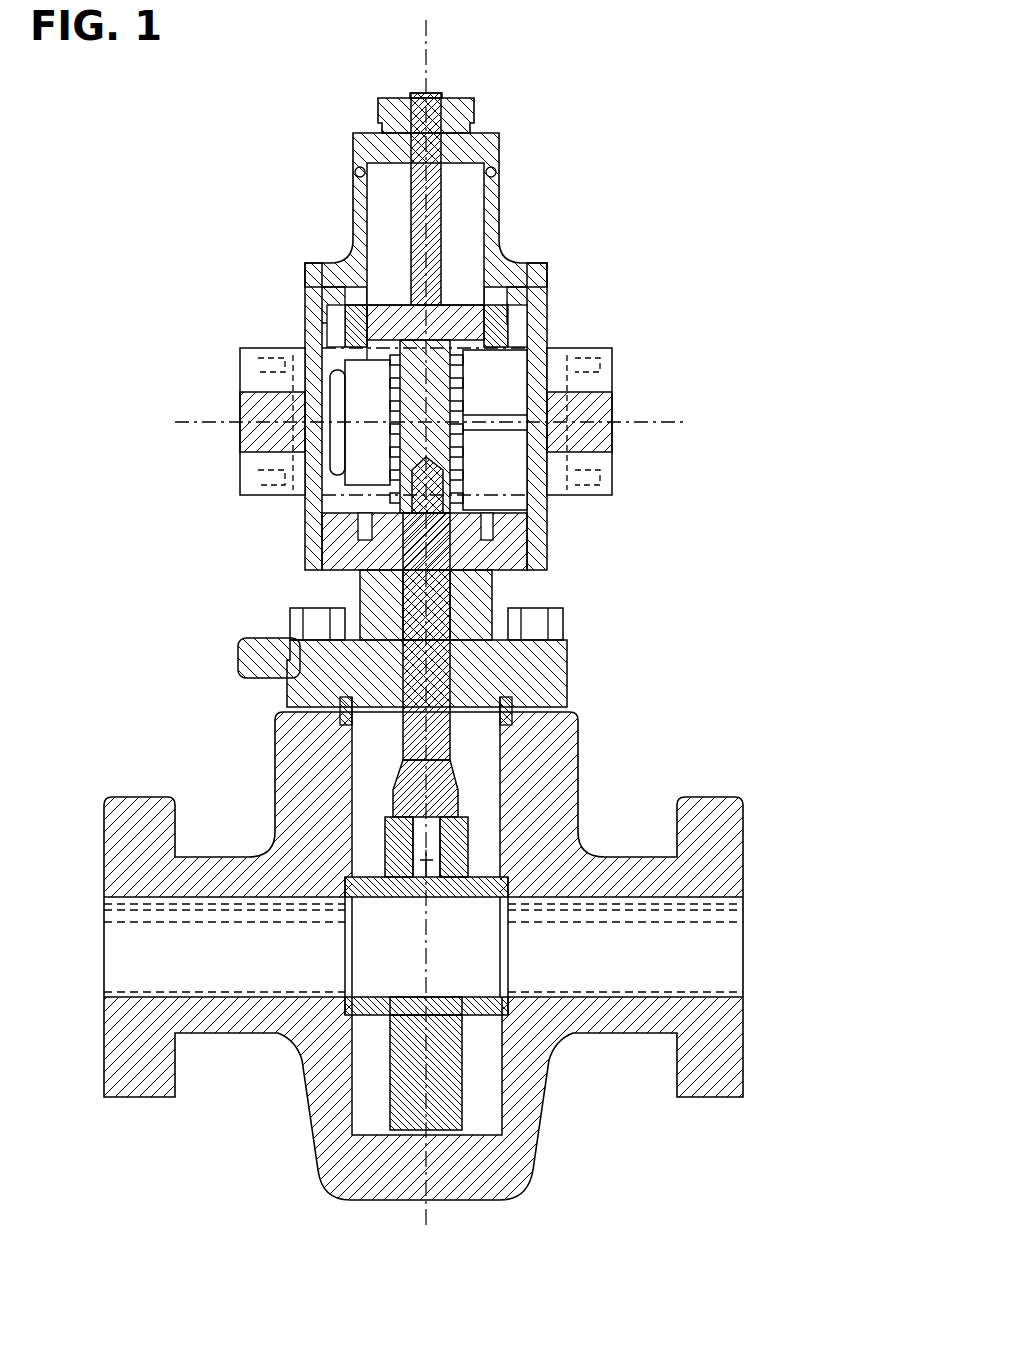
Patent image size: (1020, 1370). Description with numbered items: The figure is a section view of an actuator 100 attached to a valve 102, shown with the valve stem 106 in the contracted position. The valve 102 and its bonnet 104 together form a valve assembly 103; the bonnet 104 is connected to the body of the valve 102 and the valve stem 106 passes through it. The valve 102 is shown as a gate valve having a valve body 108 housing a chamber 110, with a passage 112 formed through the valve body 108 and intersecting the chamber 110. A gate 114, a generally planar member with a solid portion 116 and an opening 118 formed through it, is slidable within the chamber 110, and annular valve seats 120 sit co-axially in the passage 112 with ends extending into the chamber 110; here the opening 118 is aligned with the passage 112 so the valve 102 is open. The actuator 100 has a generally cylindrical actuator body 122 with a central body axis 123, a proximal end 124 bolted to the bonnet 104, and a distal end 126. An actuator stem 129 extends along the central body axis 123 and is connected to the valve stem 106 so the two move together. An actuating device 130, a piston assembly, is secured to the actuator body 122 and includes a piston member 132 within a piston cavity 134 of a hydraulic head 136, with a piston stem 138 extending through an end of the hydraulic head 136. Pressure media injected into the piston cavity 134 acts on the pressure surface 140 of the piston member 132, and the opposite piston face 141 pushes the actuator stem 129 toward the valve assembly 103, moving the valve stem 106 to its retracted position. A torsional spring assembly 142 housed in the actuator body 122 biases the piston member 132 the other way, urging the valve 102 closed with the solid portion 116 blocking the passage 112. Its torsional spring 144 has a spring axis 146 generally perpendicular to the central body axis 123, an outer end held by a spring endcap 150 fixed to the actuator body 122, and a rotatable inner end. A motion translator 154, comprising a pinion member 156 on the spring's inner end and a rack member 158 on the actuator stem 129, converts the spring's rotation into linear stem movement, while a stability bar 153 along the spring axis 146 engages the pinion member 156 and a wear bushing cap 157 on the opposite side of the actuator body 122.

The actuator 100 is at (672, 295).
The valve 102 is at (562, 765).
The valve assembly 103 is at (713, 675).
The bonnet 104 is at (550, 672).
The valve stem 106 is at (443, 627).
The valve body 108 is at (303, 778).
The chamber 110 is at (367, 1100).
The passage 112 is at (155, 898).
The gate 114 is at (443, 1097).
The solid portion 116 is at (390, 1050).
The opening 118 is at (440, 1000).
The annular valve seats 120 is at (495, 866).
The actuator body 122 is at (315, 298).
The central body axis 123 is at (428, 60).
The proximal end 124 is at (280, 565).
The distal end 126 is at (587, 265).
The actuator stem 129 is at (437, 373).
The actuating device 130 is at (300, 160).
The piston member 132 is at (503, 322).
The piston cavity 134 is at (388, 228).
The hydraulic head 136 is at (493, 212).
The piston stem 138 is at (383, 133).
The pressure surface 140 is at (455, 308).
The piston face 141 is at (388, 350).
The torsional spring assembly 142 is at (252, 540).
The torsional spring 144 is at (292, 383).
The spring axis 146 is at (668, 420).
The spring endcap 150 is at (257, 467).
The stability bar 153 is at (503, 413).
The motion translator 154 is at (326, 413).
The pinion member 156 is at (365, 462).
The wear bushing cap 157 is at (593, 468).
The rack member 158 is at (467, 455).